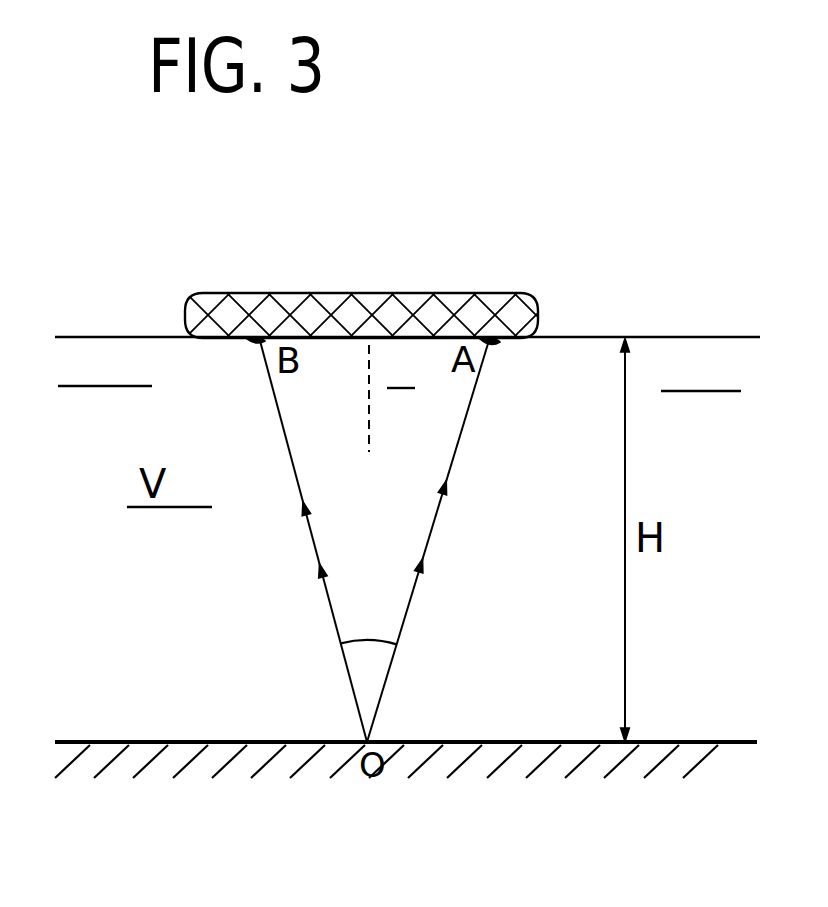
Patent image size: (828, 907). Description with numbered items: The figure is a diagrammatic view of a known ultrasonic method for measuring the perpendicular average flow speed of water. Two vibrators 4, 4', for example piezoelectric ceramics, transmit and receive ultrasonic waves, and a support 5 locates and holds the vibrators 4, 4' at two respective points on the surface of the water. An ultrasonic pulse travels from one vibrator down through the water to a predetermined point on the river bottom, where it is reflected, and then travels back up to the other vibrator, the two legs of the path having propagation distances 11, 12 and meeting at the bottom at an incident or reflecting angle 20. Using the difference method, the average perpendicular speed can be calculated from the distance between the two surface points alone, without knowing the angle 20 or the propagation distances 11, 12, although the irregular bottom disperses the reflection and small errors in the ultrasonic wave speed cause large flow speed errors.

The support 5 is at (427, 296).
The vibrator 4 is at (518, 377).
The vibrator 4' is at (221, 370).
The propagation distance 11 is at (313, 539).
The propagation distance 12 is at (428, 539).
The incident or reflecting angle 20 is at (373, 623).